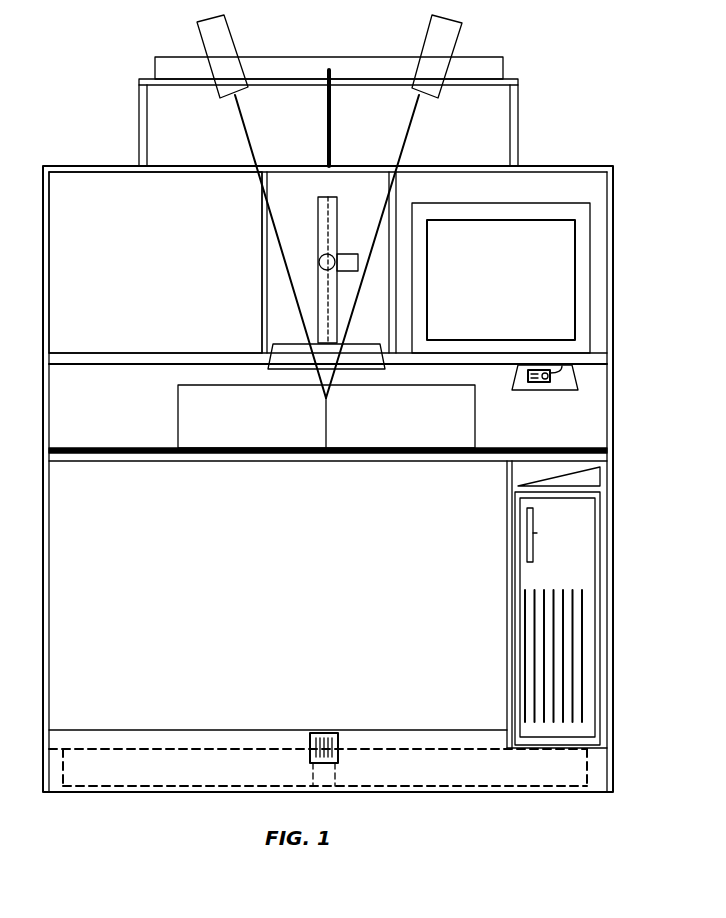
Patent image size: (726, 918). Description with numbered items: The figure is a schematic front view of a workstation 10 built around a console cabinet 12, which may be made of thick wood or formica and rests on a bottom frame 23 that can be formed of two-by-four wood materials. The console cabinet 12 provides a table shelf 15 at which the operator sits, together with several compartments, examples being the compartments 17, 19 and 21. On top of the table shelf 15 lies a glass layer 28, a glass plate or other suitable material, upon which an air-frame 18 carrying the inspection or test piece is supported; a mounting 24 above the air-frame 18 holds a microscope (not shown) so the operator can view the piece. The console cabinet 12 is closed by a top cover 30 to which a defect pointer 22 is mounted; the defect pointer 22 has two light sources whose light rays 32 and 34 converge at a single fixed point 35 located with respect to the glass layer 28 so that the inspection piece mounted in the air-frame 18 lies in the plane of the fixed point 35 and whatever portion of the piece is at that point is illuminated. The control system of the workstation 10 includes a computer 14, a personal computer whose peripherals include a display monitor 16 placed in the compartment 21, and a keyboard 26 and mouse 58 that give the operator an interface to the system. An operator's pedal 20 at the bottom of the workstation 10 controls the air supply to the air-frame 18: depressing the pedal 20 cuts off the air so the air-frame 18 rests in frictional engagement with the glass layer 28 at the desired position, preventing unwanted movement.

The workstation 10 is at (634, 115).
The console cabinet 12 is at (618, 396).
The computer 14 is at (582, 548).
The table shelf 15 is at (93, 455).
The display monitor 16 is at (580, 203).
The compartment 17 is at (83, 198).
The air-frame 18 is at (475, 422).
The compartment 19 is at (297, 190).
The operator's pedal 20 is at (338, 750).
The compartment 21 is at (547, 187).
The defect pointer 22 is at (428, 27).
The bottom frame 23 is at (590, 770).
The mounting 24 is at (338, 227).
The keyboard 26 is at (587, 480).
The glass layer 28 is at (585, 448).
The top cover 30 is at (493, 57).
The light ray 32 is at (292, 274).
The light ray 34 is at (357, 279).
The fixed point 35 is at (332, 385).
The mouse 58 is at (538, 383).